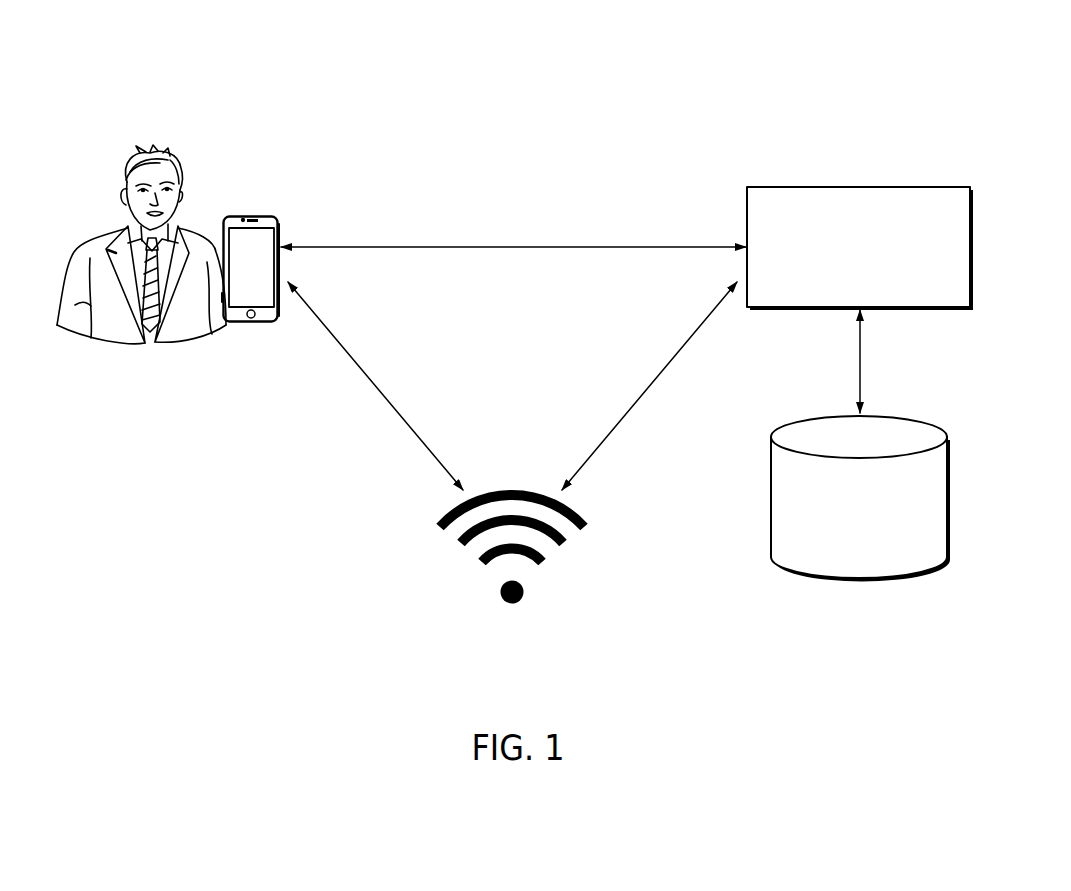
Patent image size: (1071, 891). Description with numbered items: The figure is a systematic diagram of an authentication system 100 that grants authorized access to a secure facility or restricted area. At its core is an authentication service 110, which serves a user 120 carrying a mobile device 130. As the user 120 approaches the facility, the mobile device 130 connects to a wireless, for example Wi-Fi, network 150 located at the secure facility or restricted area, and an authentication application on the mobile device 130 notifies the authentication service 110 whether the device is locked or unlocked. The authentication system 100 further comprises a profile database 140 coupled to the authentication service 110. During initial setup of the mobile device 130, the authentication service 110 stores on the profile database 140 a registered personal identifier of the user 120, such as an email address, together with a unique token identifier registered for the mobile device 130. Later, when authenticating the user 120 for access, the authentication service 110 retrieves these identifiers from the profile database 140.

The authentication system 100 is at (826, 88).
The authentication service 110 is at (836, 288).
The user 120 is at (157, 145).
The mobile device 130 is at (252, 214).
The profile database 140 is at (836, 558).
The wireless network 150 is at (447, 545).